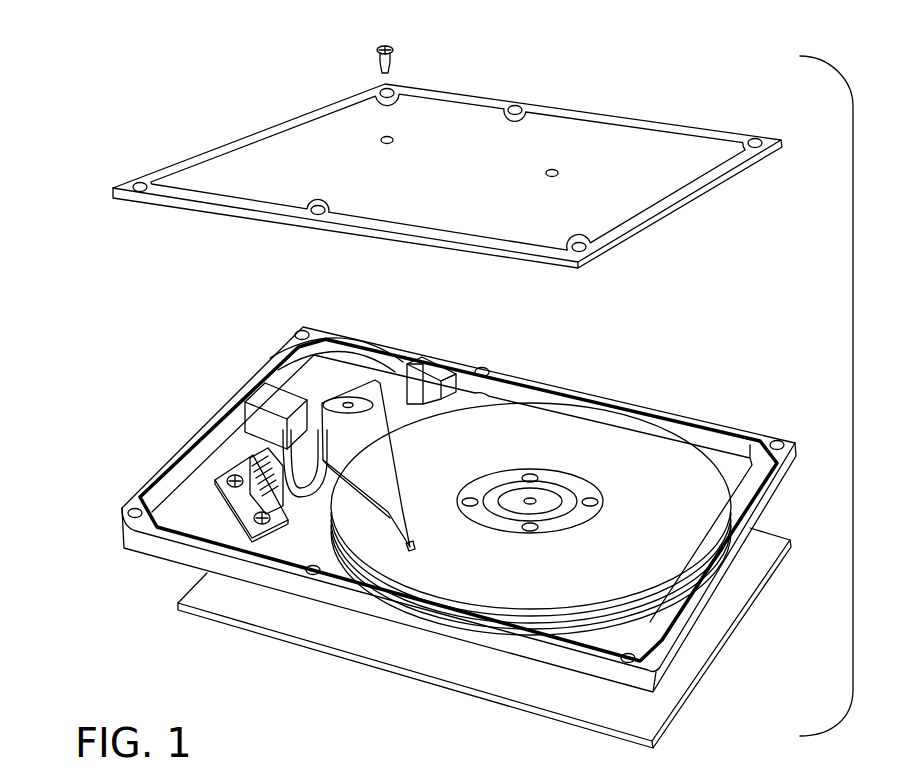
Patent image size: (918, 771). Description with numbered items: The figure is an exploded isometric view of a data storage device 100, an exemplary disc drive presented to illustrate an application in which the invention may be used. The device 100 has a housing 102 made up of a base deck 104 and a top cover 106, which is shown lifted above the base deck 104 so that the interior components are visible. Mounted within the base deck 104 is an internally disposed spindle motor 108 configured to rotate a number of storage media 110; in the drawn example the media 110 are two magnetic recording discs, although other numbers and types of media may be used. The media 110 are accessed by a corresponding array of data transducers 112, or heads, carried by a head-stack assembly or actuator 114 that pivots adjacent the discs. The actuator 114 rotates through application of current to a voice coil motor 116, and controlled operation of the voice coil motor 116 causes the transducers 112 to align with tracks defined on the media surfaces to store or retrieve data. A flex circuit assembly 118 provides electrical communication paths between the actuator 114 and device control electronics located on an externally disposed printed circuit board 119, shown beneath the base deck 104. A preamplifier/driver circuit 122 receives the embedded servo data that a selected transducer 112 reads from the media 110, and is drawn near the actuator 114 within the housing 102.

The data storage device 100 is at (170, 95).
The housing 102 is at (150, 328).
The base deck 104 is at (707, 592).
The top cover 106 is at (548, 130).
The spindle motor 108 is at (547, 498).
The storage media 110 is at (560, 617).
The data transducers 112 is at (413, 548).
The head-stack assembly 114 is at (383, 472).
The voice coil motor 116 is at (330, 367).
The flex circuit assembly 118 is at (302, 503).
The printed circuit board 119 is at (310, 650).
The preamplifier/driver circuit 122 is at (318, 405).